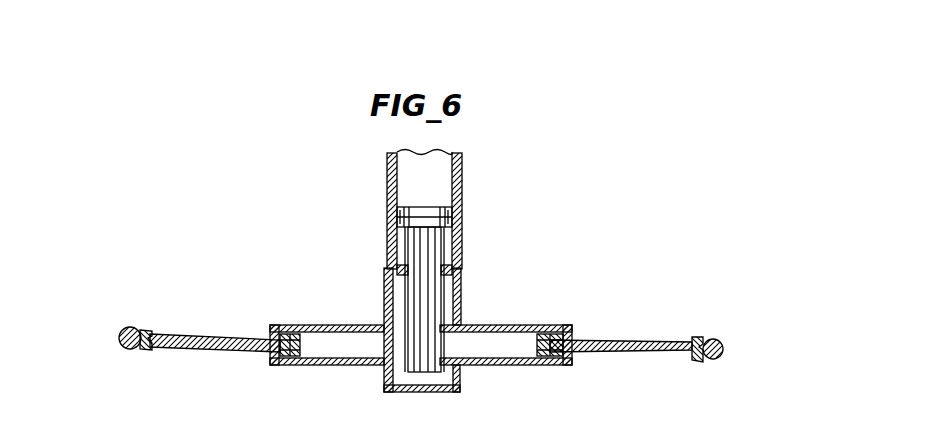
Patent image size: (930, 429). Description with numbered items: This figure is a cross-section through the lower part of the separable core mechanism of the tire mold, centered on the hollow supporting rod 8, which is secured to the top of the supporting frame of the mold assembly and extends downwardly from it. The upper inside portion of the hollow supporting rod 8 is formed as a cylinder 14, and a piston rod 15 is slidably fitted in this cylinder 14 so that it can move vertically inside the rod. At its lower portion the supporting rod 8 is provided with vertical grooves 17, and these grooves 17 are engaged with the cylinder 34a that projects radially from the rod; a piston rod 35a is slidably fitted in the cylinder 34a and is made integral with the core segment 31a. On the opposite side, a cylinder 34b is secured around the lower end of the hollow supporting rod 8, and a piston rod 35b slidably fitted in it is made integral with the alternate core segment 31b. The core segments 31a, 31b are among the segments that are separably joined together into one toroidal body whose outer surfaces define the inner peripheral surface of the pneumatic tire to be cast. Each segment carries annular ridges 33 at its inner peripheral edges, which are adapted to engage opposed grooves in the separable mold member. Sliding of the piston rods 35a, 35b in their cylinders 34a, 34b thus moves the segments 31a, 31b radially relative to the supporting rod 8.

The supporting rod 8 is at (462, 207).
The cylinder 14 is at (453, 265).
The piston rod 15 is at (433, 310).
The vertical grooves 17 is at (458, 293).
The core segment 31a is at (713, 360).
The core segment 31b is at (130, 350).
The annular ridges 33 is at (157, 335).
The cylinder 34a is at (507, 365).
The cylinder 34b is at (335, 365).
The piston rod 35a is at (637, 352).
The piston rod 35b is at (228, 348).